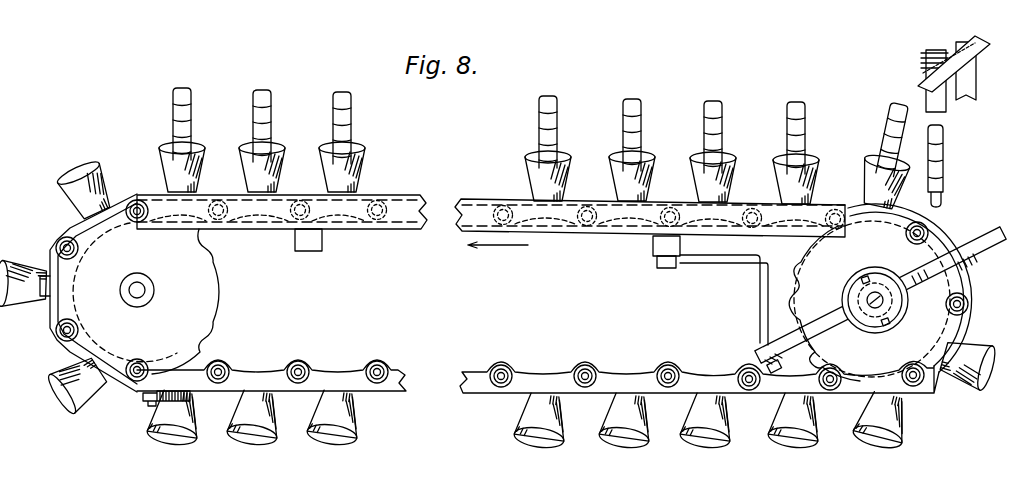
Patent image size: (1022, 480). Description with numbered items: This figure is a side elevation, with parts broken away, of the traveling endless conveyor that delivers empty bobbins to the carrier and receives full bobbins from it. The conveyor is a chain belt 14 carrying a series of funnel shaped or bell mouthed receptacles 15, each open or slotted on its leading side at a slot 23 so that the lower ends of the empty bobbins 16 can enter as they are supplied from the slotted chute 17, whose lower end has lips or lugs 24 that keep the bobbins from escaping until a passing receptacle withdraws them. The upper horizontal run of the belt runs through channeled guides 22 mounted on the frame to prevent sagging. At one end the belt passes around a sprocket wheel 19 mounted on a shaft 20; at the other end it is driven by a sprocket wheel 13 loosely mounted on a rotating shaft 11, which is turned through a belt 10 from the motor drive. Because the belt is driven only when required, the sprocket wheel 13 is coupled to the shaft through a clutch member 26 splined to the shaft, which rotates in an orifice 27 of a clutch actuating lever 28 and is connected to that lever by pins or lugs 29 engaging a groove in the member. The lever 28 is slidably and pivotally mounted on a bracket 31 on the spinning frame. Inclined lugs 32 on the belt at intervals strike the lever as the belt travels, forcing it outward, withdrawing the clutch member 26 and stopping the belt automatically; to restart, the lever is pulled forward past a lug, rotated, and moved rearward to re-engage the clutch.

The belt 10 is at (751, 361).
The shaft 11 is at (868, 306).
The sprocket wheel 13 is at (800, 270).
The chain belt 14 is at (604, 230).
The bell mouthed receptacles 15 is at (360, 160).
The empty bobbins 16 is at (188, 107).
The slotted chute 17 is at (978, 45).
The sprocket wheel 19 is at (216, 304).
The shaft 20 is at (146, 292).
The channeled guides 22 is at (428, 202).
The slot 23 is at (60, 185).
The lips or lugs 24 is at (917, 78).
The clutch member 26 is at (893, 311).
The orifice 27 is at (908, 302).
The clutch actuating lever 28 is at (926, 271).
The pins or lugs 29 is at (866, 277).
The bracket 31 is at (762, 348).
The inclined lugs 32 is at (163, 397).